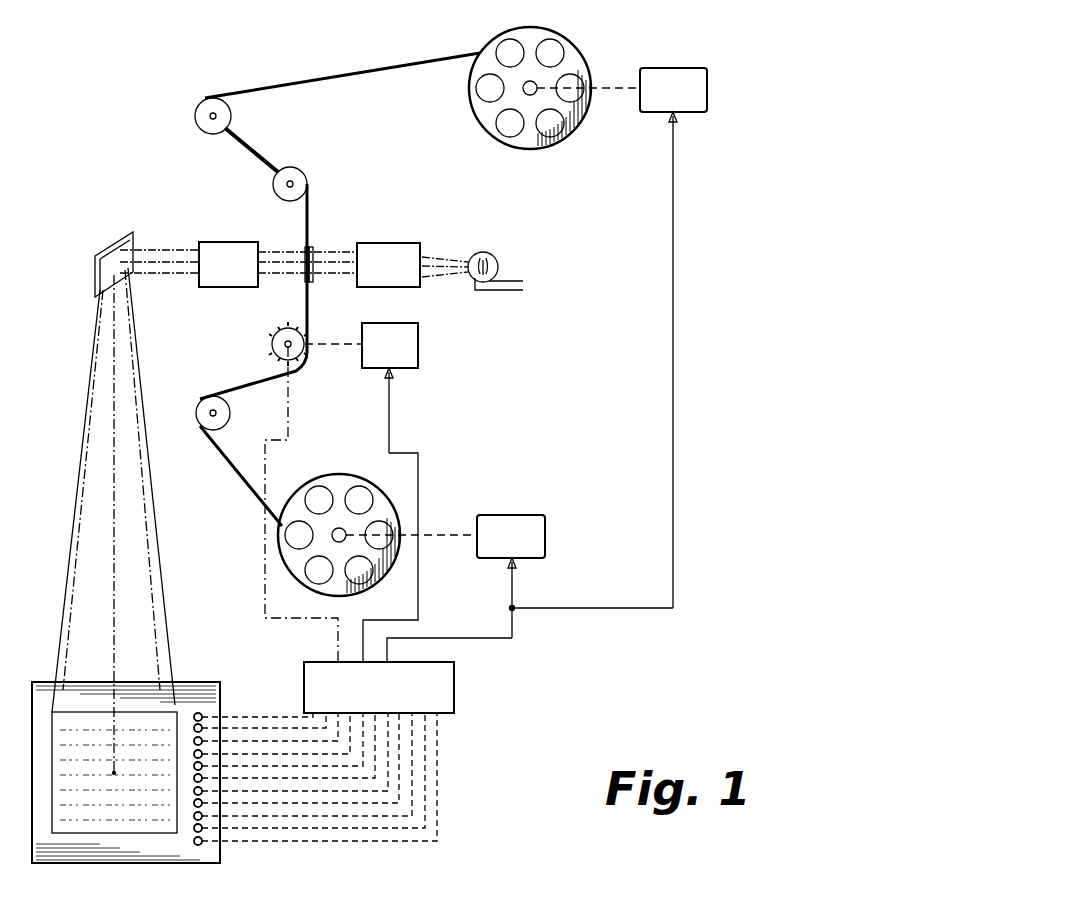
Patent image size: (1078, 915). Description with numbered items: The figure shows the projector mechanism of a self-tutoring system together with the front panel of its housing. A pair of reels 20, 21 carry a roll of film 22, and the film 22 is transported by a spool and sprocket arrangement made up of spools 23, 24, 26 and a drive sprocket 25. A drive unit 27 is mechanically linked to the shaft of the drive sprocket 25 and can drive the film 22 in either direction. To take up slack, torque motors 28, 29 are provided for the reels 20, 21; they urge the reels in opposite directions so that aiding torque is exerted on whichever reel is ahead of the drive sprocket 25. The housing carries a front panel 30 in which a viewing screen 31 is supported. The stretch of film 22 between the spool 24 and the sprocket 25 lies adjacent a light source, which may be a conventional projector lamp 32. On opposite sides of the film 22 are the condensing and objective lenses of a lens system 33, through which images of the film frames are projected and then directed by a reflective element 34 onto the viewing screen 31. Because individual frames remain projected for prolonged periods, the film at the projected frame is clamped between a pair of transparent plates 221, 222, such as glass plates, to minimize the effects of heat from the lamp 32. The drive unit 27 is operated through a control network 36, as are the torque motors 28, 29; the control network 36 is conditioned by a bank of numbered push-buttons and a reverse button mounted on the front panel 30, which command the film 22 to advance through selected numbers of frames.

The reel 20 is at (549, 142).
The reel 21 is at (350, 478).
The film 22 is at (360, 73).
The spool 23 is at (212, 132).
The spool 24 is at (293, 171).
The drive sprocket 25 is at (303, 354).
The spool 26 is at (225, 405).
The drive unit 27 is at (418, 325).
The torque motor 28 is at (695, 114).
The torque motor 29 is at (530, 516).
The front panel 30 is at (234, 758).
The viewing screen 31 is at (140, 720).
The projector lamp 32 is at (496, 258).
The lens system 33 is at (357, 243).
The reflective element 34 is at (133, 232).
The control network 36 is at (455, 664).
The transparent plate 221 is at (304, 282).
The transparent plate 222 is at (314, 282).